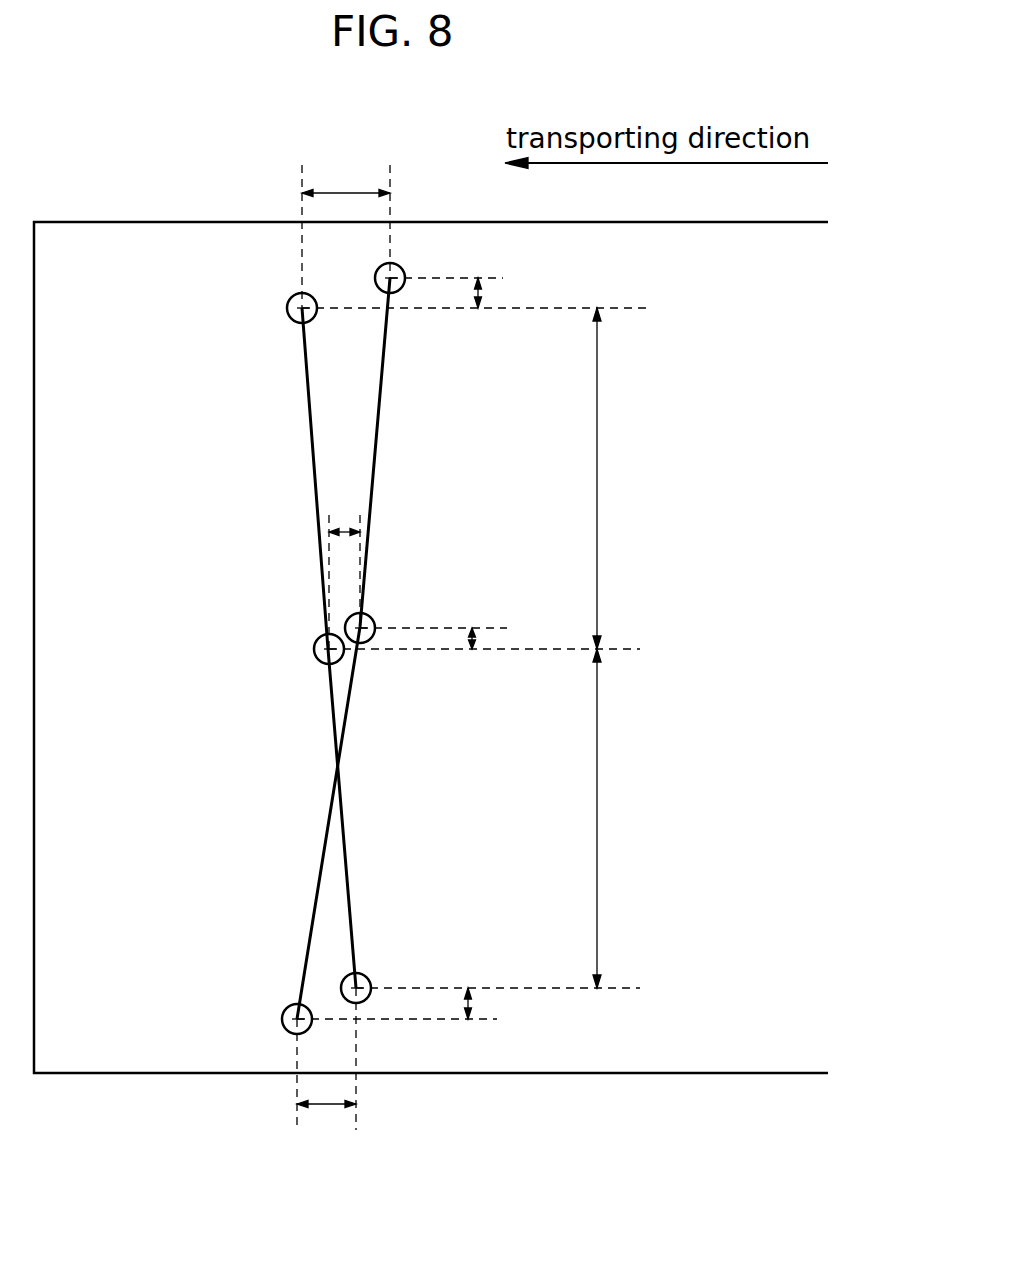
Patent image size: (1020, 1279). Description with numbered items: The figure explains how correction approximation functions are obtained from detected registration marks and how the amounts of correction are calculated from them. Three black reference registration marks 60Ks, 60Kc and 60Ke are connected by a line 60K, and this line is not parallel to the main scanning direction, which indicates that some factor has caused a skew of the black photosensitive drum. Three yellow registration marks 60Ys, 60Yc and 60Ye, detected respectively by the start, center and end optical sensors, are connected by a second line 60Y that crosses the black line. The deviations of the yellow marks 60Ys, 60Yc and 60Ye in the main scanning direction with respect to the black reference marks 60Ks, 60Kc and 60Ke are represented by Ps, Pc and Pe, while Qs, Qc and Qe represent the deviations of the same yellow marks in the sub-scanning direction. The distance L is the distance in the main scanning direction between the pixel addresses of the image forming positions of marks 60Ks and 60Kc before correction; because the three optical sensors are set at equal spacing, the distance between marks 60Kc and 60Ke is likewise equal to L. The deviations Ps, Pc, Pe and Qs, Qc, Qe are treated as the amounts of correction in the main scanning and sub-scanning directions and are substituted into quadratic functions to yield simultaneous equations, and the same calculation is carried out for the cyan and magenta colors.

The yellow registration mark line 60Y is at (385, 436).
The black reference registration mark line 60K is at (356, 868).
The yellow registration mark 60Ye is at (404, 274).
The yellow registration mark 60Yc is at (372, 620).
The yellow registration mark 60Ys is at (282, 1019).
The black reference registration mark 60Ke is at (288, 311).
The black reference registration mark 60Kc is at (315, 647).
The black reference registration mark 60Ks is at (370, 978).
The sub-scanning direction deviation Qe is at (346, 178).
The sub-scanning direction deviation Qc is at (342, 504).
The sub-scanning direction deviation Qs is at (326, 1123).
The main scanning direction deviation Pe is at (478, 297).
The main scanning direction deviation Pc is at (472, 652).
The main scanning direction deviation Ps is at (468, 1004).
The distance between pixels L is at (610, 648).